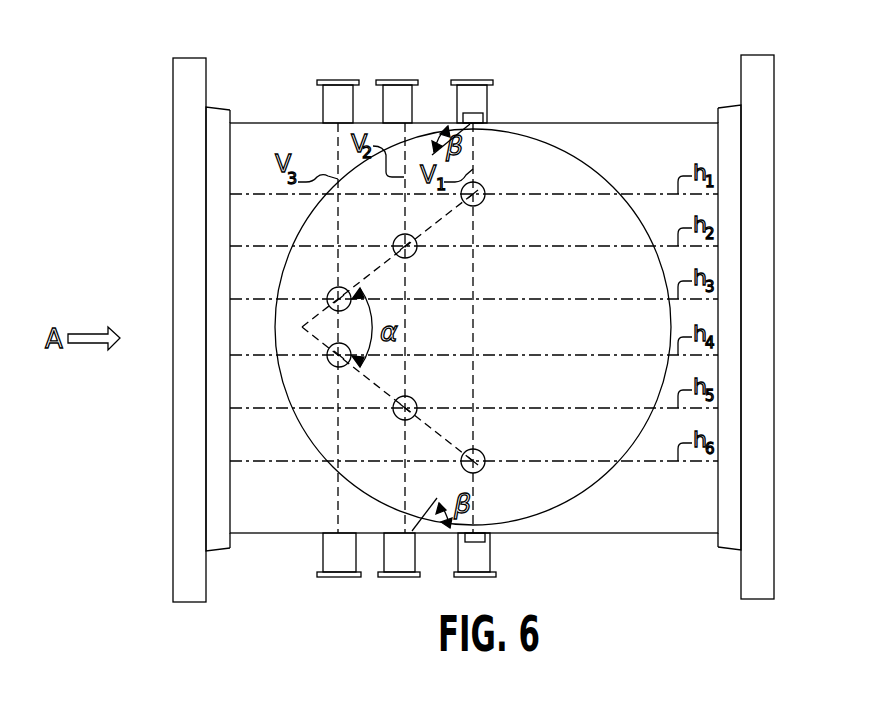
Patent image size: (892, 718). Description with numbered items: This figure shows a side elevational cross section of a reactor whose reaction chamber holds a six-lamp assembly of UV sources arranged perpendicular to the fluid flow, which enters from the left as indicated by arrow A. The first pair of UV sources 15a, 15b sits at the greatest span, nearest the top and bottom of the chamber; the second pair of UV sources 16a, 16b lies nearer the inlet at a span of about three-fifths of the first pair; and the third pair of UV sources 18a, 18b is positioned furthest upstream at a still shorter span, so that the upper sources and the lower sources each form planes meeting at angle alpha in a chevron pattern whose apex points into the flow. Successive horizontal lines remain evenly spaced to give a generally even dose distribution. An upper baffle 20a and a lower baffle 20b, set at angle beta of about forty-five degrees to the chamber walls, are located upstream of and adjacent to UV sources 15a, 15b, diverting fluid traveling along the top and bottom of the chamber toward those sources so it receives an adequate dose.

The UV source of the first pair 15a is at (484, 187).
The UV source of the first pair 15b is at (484, 470).
The UV source of the second pair 16a is at (398, 236).
The UV source of the second pair 16b is at (398, 417).
The UV source of the third pair 18a is at (331, 289).
The UV source of the third pair 18b is at (331, 365).
The upper baffle 20a is at (422, 136).
The lower baffle 20b is at (436, 501).